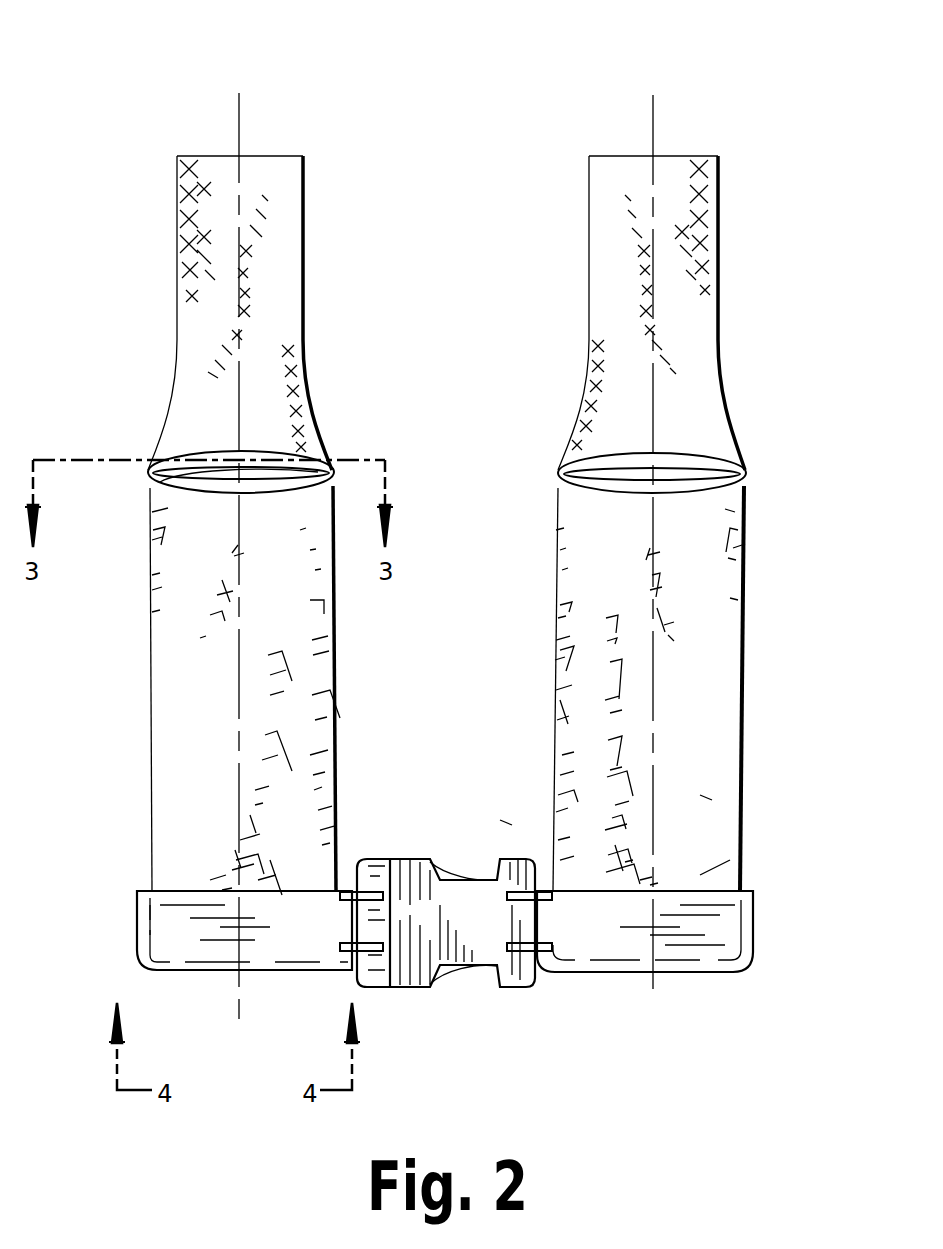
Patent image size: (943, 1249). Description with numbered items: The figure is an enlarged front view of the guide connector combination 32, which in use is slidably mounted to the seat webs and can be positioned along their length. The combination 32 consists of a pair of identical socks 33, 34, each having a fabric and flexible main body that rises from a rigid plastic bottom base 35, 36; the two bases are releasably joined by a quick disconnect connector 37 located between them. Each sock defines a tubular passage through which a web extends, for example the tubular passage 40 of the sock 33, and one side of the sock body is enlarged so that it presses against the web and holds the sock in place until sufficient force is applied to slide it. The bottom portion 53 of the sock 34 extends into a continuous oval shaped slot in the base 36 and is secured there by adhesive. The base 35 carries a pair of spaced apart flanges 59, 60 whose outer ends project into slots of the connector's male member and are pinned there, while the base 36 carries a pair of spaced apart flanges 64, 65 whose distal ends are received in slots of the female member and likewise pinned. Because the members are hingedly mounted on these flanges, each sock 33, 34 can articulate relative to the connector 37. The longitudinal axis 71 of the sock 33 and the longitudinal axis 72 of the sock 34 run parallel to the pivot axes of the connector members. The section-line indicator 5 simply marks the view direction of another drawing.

The guide connector combination 32 is at (705, 100).
The sock 33 is at (283, 210).
The sock 34 is at (716, 182).
The bottom base 35 is at (145, 902).
The bottom base 36 is at (730, 897).
The quick disconnect connector 37 is at (410, 833).
The tubular passage 40 is at (205, 472).
The bottom portion 53 is at (710, 872).
The flange 59 is at (348, 882).
The flange 60 is at (345, 955).
The flange 64 is at (520, 952).
The flange 65 is at (527, 862).
The longitudinal axis 71 is at (241, 104).
The longitudinal axis 72 is at (652, 108).
The section line reference 5 is at (514, 825).